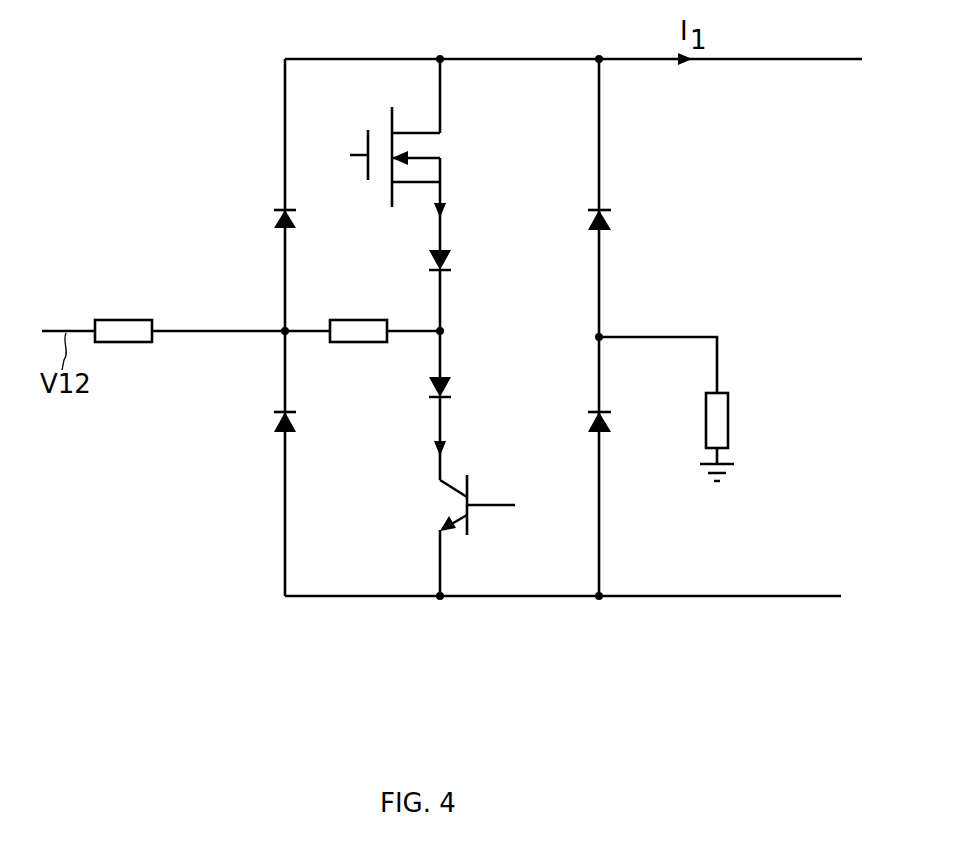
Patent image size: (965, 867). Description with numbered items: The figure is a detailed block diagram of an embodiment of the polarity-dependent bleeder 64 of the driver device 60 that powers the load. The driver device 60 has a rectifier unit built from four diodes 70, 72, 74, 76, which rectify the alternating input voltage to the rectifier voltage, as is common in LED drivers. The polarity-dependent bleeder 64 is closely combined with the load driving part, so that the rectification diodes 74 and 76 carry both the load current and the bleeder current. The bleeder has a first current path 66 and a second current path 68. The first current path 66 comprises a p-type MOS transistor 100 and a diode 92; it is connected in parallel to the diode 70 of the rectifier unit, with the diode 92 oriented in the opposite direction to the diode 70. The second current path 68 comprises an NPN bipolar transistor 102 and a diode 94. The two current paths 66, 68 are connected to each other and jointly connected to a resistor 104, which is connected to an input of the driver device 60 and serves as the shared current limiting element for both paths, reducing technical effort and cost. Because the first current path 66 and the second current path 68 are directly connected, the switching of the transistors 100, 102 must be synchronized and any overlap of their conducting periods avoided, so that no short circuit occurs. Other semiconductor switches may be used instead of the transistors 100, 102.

The driver device 60 is at (230, 57).
The polarity-dependent bleeder 64 is at (447, 655).
The first current path 66 is at (440, 83).
The second current path 68 is at (440, 564).
The diode 70 is at (274, 222).
The diode 72 is at (274, 424).
The diode 74 is at (611, 222).
The diode 76 is at (611, 424).
The diode 92 is at (452, 258).
The diode 94 is at (452, 386).
The p-type MOS transistor 100 is at (392, 197).
The NPN bipolar transistor 102 is at (440, 482).
The resistor 104 is at (362, 320).